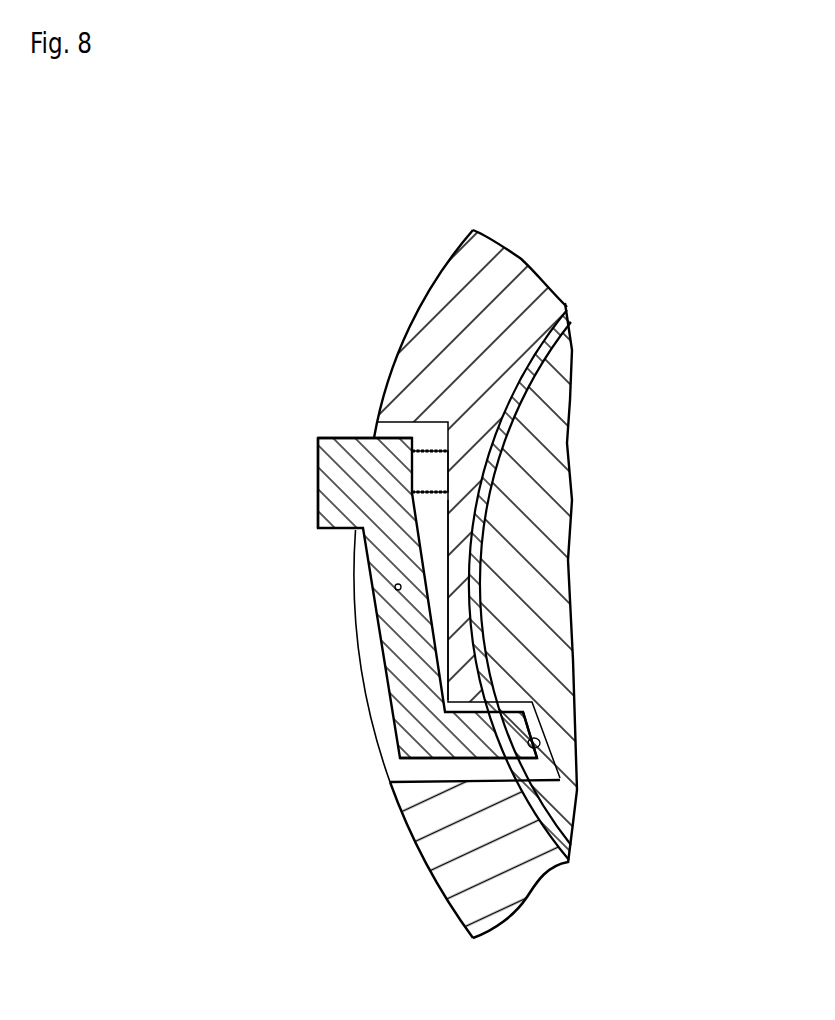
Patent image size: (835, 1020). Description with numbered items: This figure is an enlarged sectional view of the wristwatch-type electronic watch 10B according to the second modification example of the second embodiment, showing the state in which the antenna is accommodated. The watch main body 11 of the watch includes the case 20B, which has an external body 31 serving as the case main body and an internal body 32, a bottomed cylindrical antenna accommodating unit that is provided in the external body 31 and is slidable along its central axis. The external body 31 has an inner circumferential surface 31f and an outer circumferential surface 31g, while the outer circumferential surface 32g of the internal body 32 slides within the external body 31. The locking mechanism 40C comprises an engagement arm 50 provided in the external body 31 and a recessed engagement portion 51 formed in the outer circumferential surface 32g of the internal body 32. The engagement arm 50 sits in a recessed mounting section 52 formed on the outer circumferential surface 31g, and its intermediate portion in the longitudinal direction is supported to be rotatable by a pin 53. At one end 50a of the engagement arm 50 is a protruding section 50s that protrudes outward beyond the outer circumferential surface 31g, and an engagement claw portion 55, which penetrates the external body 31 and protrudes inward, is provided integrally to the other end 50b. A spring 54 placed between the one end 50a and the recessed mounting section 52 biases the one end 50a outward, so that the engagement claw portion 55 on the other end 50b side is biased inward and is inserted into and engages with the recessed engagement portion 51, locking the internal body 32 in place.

The wristwatch-type electronic watch 10B is at (254, 246).
The case 20B is at (421, 267).
The external body 31 is at (418, 313).
The inner circumferential surface 31f is at (536, 355).
The outer circumferential surface 31g is at (393, 368).
The internal body 32 is at (548, 407).
The outer circumferential surface 32g is at (539, 820).
The spring 54 is at (432, 451).
The recessed mounting section 52 is at (446, 535).
The one end 50a is at (333, 453).
The protruding section 50s is at (333, 508).
The engagement arm 50 is at (367, 557).
The pin 53 is at (396, 590).
The locking mechanism 40C is at (350, 735).
The watch main body 11 is at (396, 846).
The engagement claw portion 55 is at (530, 715).
The recessed engagement portion 51 is at (540, 743).
The other end 50b is at (527, 757).